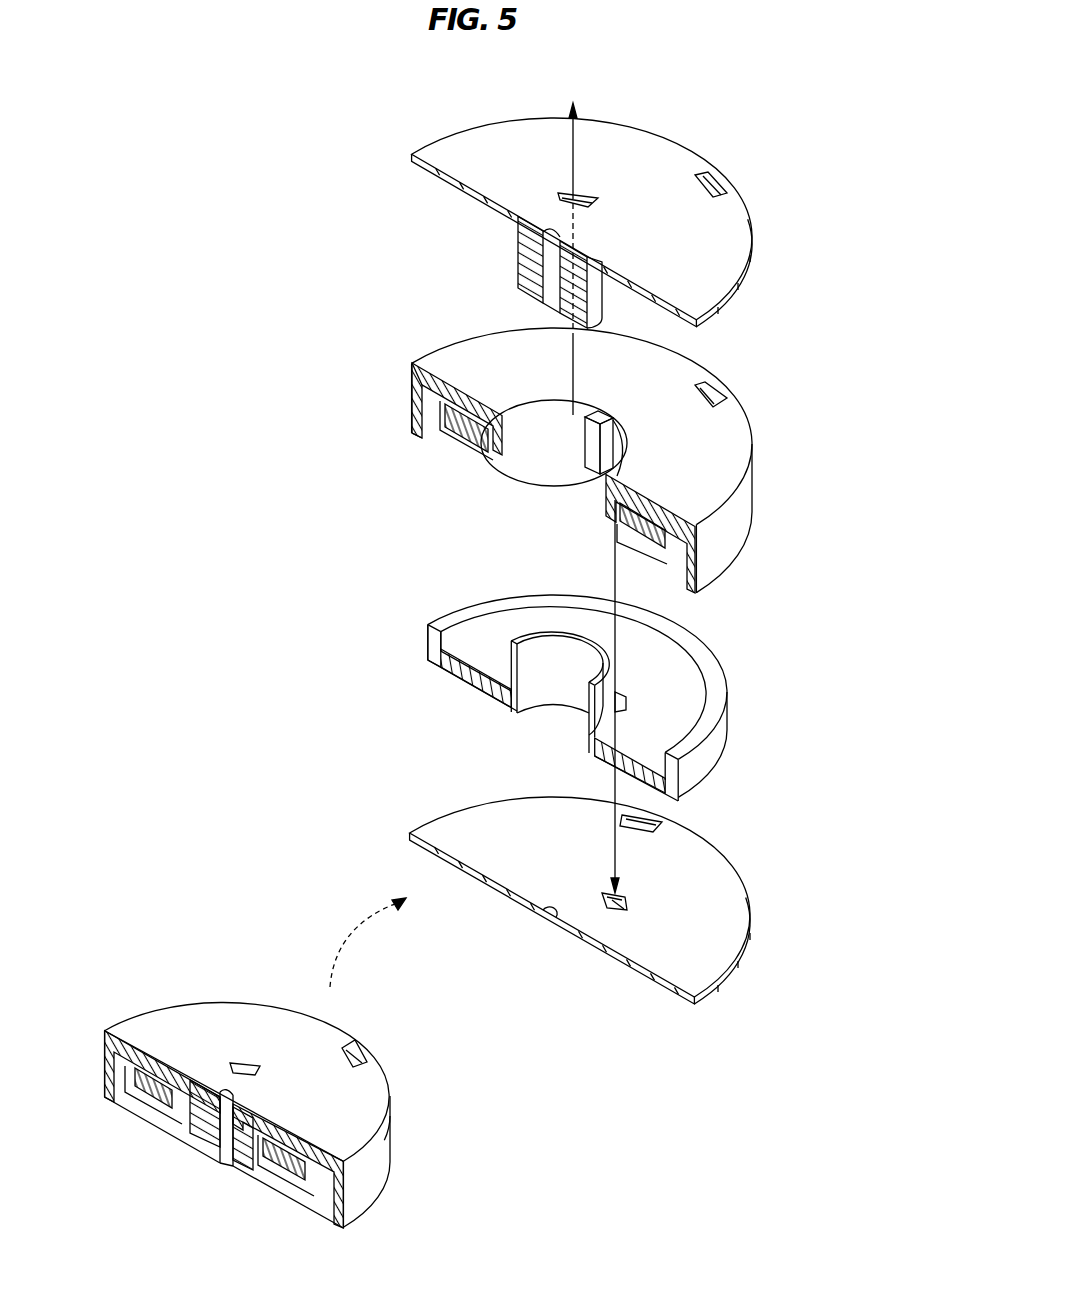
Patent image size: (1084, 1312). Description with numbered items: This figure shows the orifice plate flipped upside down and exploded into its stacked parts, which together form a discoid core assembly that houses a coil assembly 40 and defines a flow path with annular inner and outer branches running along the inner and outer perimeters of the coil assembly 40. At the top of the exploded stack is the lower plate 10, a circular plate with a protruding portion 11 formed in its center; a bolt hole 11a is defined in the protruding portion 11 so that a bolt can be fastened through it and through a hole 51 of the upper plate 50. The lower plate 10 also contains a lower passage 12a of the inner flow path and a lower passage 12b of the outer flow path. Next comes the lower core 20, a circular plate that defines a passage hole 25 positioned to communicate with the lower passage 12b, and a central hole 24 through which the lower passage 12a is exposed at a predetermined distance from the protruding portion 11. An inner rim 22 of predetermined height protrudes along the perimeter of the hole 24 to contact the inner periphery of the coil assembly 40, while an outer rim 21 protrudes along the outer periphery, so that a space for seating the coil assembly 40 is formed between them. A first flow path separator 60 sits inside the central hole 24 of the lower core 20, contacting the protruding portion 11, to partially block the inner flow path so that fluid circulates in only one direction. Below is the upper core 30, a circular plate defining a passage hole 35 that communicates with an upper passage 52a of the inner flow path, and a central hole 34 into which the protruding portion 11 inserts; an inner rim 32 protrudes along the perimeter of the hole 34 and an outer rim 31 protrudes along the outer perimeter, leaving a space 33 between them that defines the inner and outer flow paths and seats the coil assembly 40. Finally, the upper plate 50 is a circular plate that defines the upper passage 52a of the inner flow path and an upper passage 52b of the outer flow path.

The lower plate 10 is at (768, 195).
The protruding portion 11 is at (518, 252).
The bolt hole 11a is at (552, 268).
The lower passage of the inner flow path 12a is at (567, 192).
The lower passage of the outer flow path 12b is at (709, 172).
The lower core 20 is at (780, 423).
The outer rim 21 is at (410, 414).
The inner rim 22 is at (493, 457).
The hole 24 is at (537, 462).
The passage hole 25 is at (712, 392).
The upper core 30 is at (760, 684).
The outer rim 31 is at (430, 630).
The inner rim 32 is at (478, 648).
The space 33 is at (447, 667).
The hole 34 is at (556, 690).
The passage hole 35 is at (626, 697).
The coil assembly 40 is at (622, 522).
The upper plate 50 is at (780, 892).
The hole 51 is at (547, 913).
The upper passage of the inner flow path 52a is at (621, 912).
The upper passage of the outer flow path 52b is at (665, 822).
The first flow path separator 60 is at (590, 442).